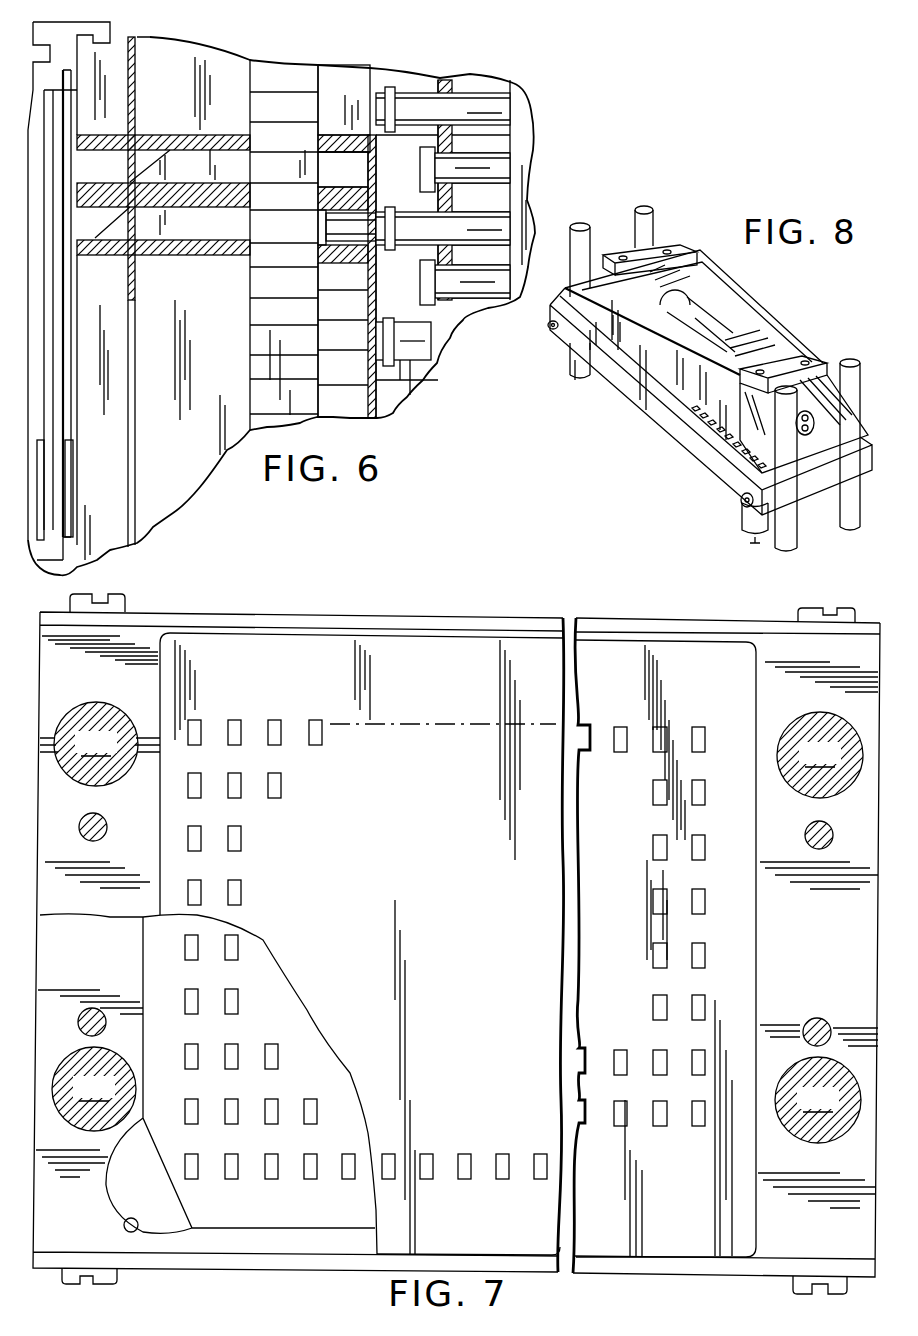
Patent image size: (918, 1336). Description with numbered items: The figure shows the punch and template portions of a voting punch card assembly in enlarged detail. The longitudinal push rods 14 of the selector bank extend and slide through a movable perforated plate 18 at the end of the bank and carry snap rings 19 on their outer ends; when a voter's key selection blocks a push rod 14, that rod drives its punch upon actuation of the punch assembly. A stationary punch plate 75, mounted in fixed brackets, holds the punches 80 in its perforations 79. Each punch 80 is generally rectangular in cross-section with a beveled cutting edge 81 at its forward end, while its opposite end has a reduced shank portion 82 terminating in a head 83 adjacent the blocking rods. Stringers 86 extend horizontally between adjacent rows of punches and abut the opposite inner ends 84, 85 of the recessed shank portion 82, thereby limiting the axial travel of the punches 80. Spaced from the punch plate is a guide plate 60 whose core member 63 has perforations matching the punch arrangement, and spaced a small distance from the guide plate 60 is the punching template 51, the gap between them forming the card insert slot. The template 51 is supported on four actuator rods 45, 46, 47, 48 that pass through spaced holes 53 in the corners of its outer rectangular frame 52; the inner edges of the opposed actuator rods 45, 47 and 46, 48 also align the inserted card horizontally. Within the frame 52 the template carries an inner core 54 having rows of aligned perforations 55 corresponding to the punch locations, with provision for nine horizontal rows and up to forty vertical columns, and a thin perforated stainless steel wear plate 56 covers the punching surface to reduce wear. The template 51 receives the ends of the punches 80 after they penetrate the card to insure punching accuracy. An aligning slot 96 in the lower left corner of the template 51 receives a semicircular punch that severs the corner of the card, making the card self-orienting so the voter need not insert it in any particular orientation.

In FIG. 6, the longitudinal push rods 14 is at (478, 107).
In FIG. 6, the movable perforated plate 18 is at (446, 300).
In FIG. 6, the snap rings 19 is at (437, 338).
In FIG. 7, the actuator rod 45 is at (96, 744).
In FIG. 7, the actuator rod 46 is at (94, 1089).
In FIG. 7, the actuator rod 47 is at (812, 712).
In FIG. 7, the actuator rod 48 is at (818, 1100).
In FIG. 6, the punching template 51 is at (116, 56).
In FIG. 7, the punching template 51 is at (234, 605).
In FIG. 7, the frame 52 is at (124, 639).
In FIG. 7, the holes 53 is at (814, 739).
In FIG. 7, the inner core 54 is at (310, 652).
In FIG. 7, the perforations 55 is at (318, 731).
In FIG. 7, the wear plate 56 is at (428, 667).
In FIG. 6, the guide plate 60 is at (188, 52).
In FIG. 7, the core member 63 is at (283, 1005).
In FIG. 6, the punch plate 75 is at (349, 90).
In FIG. 6, the perforations 79 is at (340, 250).
In FIG. 6, the punches 80 is at (268, 167).
In FIG. 6, the beveled cutting edge 81 is at (150, 167).
In FIG. 6, the reduced shank portion 82 is at (402, 163).
In FIG. 6, the head 83 is at (425, 148).
In FIG. 6, the inner end 84 is at (336, 238).
In FIG. 6, the inner end 85 is at (375, 254).
In FIG. 6, the stringers 86 is at (378, 196).
In FIG. 7, the aligning slot 96 is at (127, 1222).